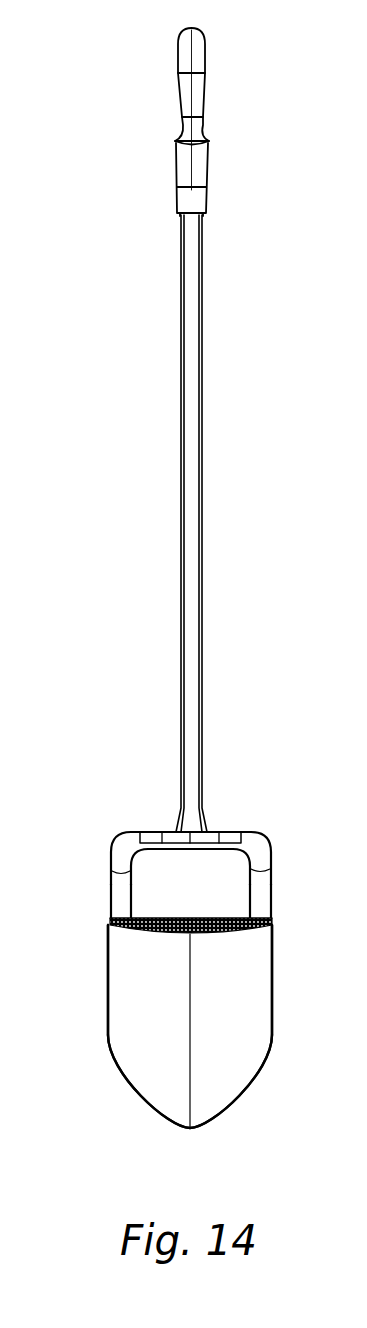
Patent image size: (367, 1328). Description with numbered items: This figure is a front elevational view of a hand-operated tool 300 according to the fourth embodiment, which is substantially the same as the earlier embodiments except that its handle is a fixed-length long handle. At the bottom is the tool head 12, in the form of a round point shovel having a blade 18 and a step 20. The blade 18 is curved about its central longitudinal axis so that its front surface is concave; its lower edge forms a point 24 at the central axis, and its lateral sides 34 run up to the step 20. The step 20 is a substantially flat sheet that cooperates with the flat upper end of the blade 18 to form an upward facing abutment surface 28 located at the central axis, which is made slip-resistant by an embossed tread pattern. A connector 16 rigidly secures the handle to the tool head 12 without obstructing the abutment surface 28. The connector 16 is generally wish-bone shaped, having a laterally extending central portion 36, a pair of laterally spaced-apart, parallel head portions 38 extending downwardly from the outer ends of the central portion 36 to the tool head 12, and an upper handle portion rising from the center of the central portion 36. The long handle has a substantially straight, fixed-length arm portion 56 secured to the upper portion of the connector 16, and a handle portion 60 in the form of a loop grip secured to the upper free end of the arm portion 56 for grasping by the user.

The hand-operated tool 300 is at (298, 471).
The handle portion 60 is at (207, 163).
The arm portion 56 is at (207, 508).
The central portion 36 is at (240, 832).
The connector 16 is at (271, 858).
The head portions 38 is at (110, 905).
The abutment surface 28 is at (227, 918).
The step 20 is at (160, 918).
The tool head 12 is at (272, 1048).
The sides 34 is at (108, 985).
The blade 18 is at (237, 1108).
The point 24 is at (189, 1130).